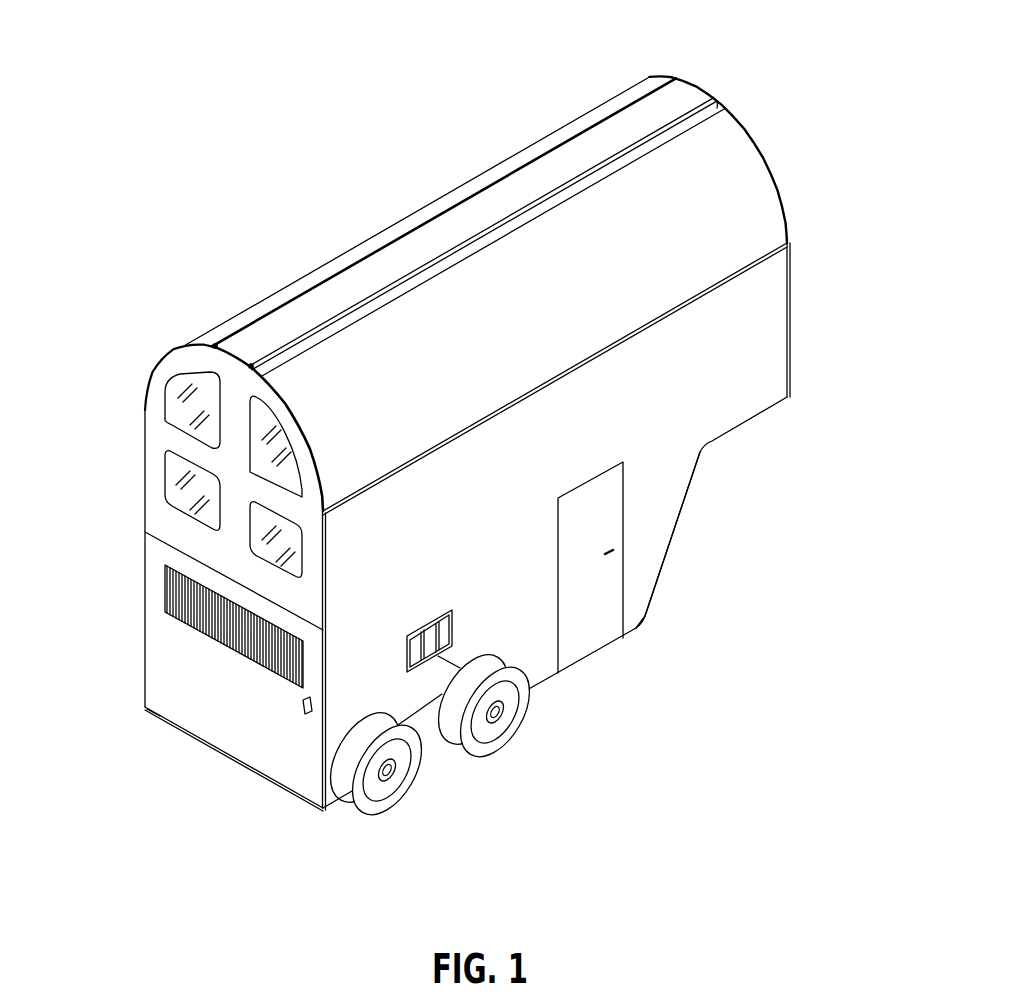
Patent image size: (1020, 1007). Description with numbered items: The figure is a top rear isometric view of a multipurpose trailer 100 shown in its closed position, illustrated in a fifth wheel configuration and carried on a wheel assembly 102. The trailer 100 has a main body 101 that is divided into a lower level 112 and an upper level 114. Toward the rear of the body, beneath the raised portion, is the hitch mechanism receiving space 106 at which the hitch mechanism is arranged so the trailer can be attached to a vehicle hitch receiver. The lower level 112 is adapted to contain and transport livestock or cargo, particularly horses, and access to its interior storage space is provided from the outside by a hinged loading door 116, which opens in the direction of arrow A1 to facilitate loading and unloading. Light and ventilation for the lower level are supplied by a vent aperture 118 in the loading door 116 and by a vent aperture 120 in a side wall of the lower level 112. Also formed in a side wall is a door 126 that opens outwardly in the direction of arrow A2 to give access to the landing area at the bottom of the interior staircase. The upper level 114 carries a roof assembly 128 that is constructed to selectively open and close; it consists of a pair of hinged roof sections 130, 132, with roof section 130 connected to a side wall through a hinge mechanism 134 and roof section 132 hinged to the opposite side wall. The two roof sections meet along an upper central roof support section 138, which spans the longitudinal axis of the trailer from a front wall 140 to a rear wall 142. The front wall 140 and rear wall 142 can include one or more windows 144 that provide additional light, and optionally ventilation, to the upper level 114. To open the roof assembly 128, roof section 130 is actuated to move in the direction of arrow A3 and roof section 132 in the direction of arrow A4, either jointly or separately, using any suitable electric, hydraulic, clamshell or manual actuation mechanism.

The multipurpose trailer 100 is at (215, 204).
The main body 101 is at (685, 520).
The wheel assembly 102 is at (516, 751).
The hitch mechanism receiving space 106 is at (739, 451).
The lower level 112 is at (128, 647).
The upper level 114 is at (135, 435).
The loading door 116 is at (212, 714).
The vent aperture 118 is at (165, 595).
The vent aperture 120 is at (456, 616).
The door 126 is at (612, 597).
The roof assembly 128 is at (524, 128).
The roof section 130 is at (724, 170).
The roof section 132 is at (632, 93).
The hinge mechanism 134 is at (795, 262).
The upper central roof support section 138 is at (698, 96).
The front wall 140 is at (773, 176).
The rear wall 142 is at (161, 389).
The windows 144 is at (172, 500).
The arrow A1 is at (310, 722).
The arrow A2 is at (592, 626).
The arrow A3 is at (520, 272).
The arrow A4 is at (320, 158).